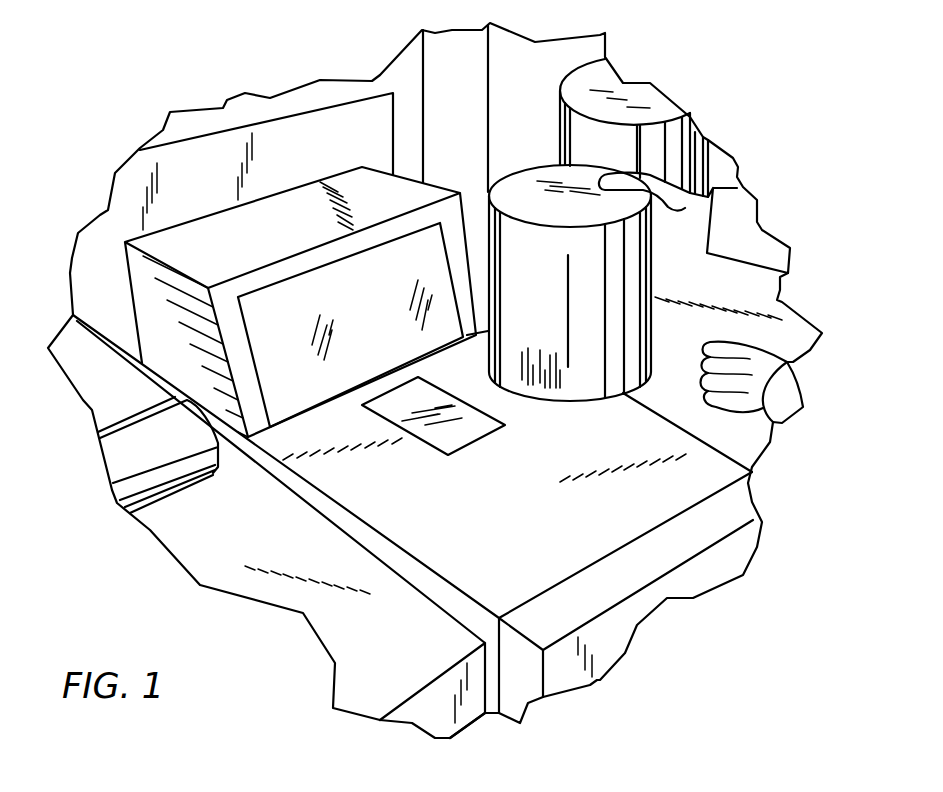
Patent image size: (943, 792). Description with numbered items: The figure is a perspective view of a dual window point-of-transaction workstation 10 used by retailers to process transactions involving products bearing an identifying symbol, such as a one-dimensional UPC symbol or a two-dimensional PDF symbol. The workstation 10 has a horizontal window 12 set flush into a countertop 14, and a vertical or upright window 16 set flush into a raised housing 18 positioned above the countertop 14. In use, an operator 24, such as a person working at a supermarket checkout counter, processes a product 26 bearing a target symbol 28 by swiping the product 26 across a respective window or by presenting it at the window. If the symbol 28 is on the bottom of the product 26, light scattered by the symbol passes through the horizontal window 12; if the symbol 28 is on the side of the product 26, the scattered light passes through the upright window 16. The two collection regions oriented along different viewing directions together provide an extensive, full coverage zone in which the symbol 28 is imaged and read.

The point-of-transaction workstation 10 is at (727, 511).
The horizontal window 12 is at (452, 441).
The countertop 14 is at (615, 515).
The vertical window 16 is at (273, 329).
The raised housing 18 is at (152, 297).
The operator 24 is at (748, 248).
The product 26 is at (547, 176).
The target symbol 28 is at (530, 370).